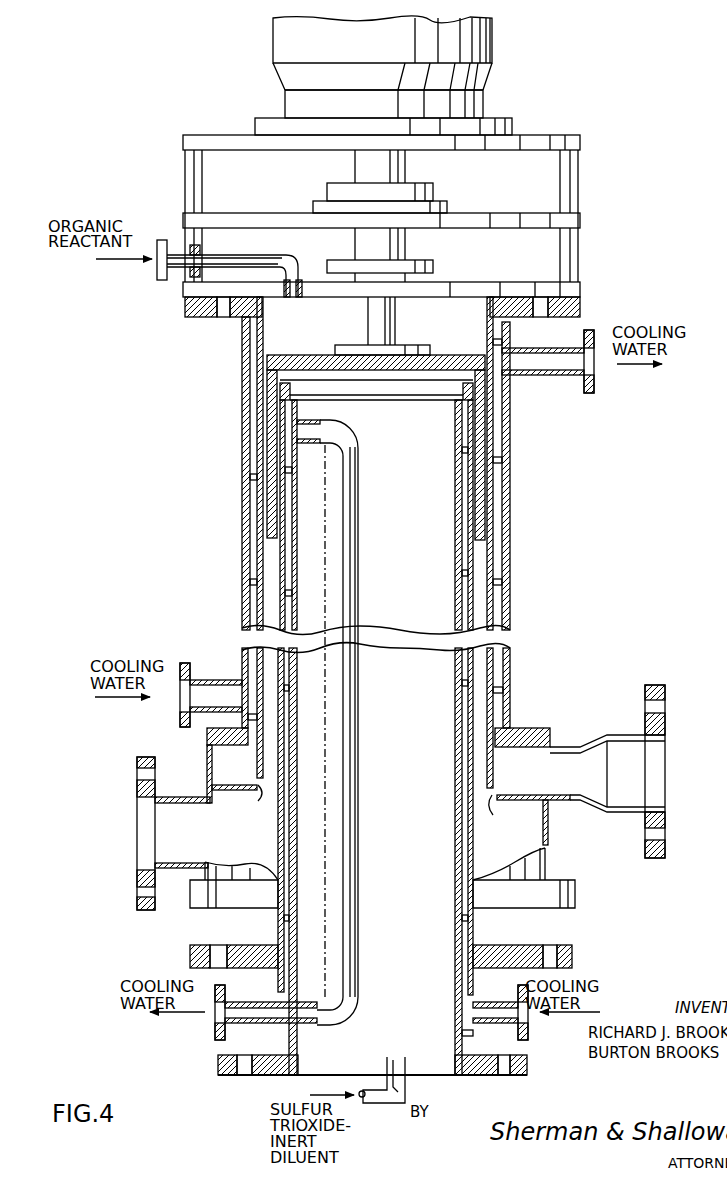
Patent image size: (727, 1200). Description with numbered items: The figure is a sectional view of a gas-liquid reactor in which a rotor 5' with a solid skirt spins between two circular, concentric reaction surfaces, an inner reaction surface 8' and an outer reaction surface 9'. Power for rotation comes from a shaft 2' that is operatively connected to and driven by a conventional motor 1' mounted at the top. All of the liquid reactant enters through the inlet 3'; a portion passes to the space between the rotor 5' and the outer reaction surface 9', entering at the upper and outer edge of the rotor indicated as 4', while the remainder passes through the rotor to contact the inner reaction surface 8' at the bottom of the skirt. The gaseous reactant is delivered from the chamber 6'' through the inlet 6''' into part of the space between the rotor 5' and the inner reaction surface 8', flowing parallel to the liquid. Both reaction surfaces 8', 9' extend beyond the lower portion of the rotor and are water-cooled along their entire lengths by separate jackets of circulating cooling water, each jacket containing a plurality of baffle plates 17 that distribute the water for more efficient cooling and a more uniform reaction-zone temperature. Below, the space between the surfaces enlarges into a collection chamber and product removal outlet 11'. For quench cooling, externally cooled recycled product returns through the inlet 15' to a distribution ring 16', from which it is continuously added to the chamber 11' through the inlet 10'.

The motor 1' is at (394, 75).
The shaft 2' is at (380, 252).
The inlet 3' is at (239, 264).
The upper and outer edge of the rotor 4' is at (349, 542).
The rotor 5' is at (376, 427).
The inlet 6''' is at (336, 683).
The chamber 6'' is at (498, 697).
The inner reaction surface 8' is at (383, 722).
The outer reaction surface 9' is at (387, 735).
The baffle plates 17 is at (270, 575).
The distribution ring 16' is at (375, 747).
The collection chamber and product removal outlet 11' is at (153, 833).
The inlet 10' is at (391, 815).
The inlet 15' is at (633, 771).